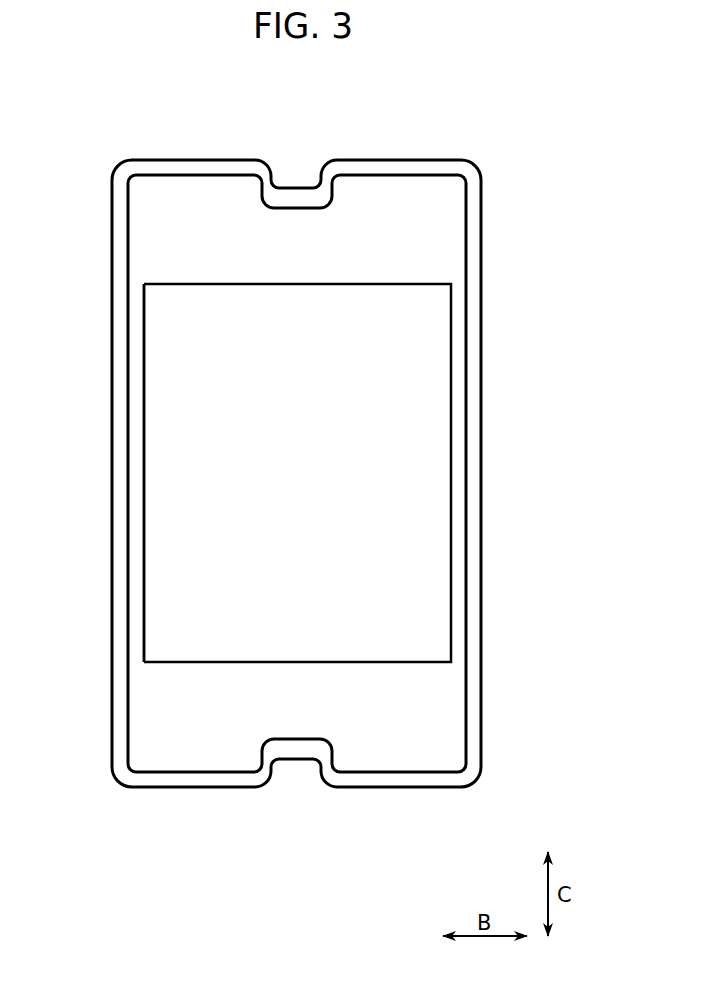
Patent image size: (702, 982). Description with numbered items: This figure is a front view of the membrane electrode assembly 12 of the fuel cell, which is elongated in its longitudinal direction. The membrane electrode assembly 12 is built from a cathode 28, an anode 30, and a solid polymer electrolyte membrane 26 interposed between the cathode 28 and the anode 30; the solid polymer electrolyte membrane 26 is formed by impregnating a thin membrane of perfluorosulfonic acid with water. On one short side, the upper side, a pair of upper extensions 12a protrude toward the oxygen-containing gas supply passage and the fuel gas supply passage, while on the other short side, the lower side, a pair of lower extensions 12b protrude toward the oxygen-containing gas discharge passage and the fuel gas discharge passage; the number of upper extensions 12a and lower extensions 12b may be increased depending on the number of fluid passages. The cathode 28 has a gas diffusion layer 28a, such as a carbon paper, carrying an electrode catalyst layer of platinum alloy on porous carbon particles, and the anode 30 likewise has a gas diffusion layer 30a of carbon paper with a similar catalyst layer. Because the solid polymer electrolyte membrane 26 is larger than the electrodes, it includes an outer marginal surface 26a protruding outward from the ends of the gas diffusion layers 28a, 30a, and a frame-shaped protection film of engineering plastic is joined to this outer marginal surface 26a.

The membrane electrode assembly 12 is at (441, 69).
The upper extensions 12a is at (191, 157).
The lower extensions 12b is at (187, 790).
The solid polymer electrolyte membrane 26 is at (470, 640).
The outer marginal surface 26a is at (481, 244).
The cathode 28 is at (289, 473).
The gas diffusion layer 28a is at (157, 474).
The anode 30 is at (289, 473).
The gas diffusion layer 30a is at (157, 396).